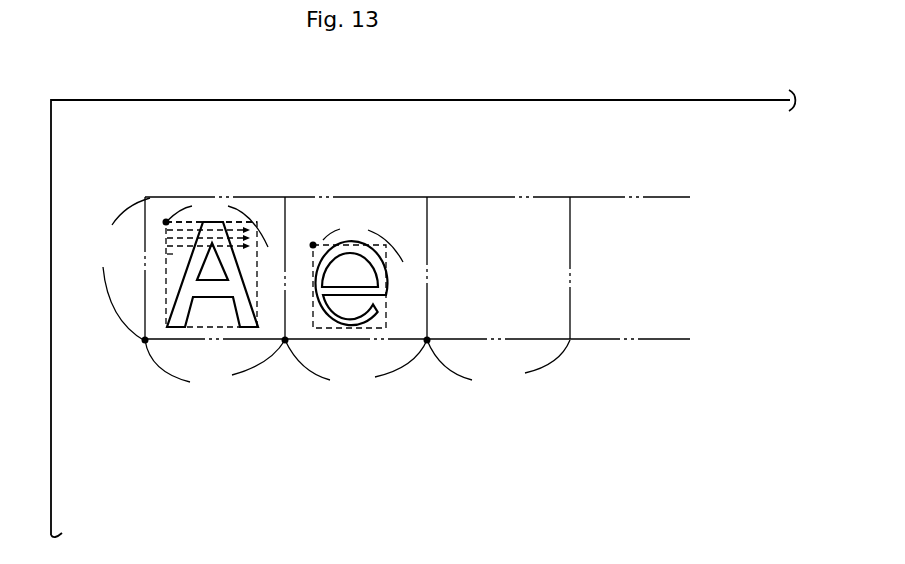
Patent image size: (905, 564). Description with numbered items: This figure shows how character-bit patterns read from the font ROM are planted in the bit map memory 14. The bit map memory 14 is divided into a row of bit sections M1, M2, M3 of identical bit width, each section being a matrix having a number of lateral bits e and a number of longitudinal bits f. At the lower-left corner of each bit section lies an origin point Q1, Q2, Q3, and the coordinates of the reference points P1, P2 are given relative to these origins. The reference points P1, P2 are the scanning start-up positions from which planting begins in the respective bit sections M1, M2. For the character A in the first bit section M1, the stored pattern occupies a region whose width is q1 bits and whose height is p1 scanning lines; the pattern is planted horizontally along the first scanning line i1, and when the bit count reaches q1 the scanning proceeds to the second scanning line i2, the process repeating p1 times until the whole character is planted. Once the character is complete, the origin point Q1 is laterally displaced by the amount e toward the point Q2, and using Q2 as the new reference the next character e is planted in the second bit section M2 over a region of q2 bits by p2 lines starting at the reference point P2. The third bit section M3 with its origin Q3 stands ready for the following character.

The bit map memory 14 is at (562, 117).
The first bit section M1 is at (160, 330).
The second bit section M2 is at (302, 328).
The third bit section M3 is at (468, 212).
The first reference point P1 is at (166, 222).
The second reference point P2 is at (313, 245).
The first origin point Q1 is at (145, 340).
The second origin point Q2 is at (285, 344).
The third origin point Q3 is at (427, 344).
The number of scanning lines of first character pattern p1 is at (257, 316).
The number of scanning lines of second character pattern p2 is at (392, 317).
The bit width of first character pattern q1 is at (217, 224).
The bit width of second character pattern q2 is at (363, 242).
The first scanning line i1 is at (233, 211).
The second scanning line i2 is at (172, 233).
The number of longitudinal bits f is at (122, 269).
The number of lateral bits e is at (357, 365).